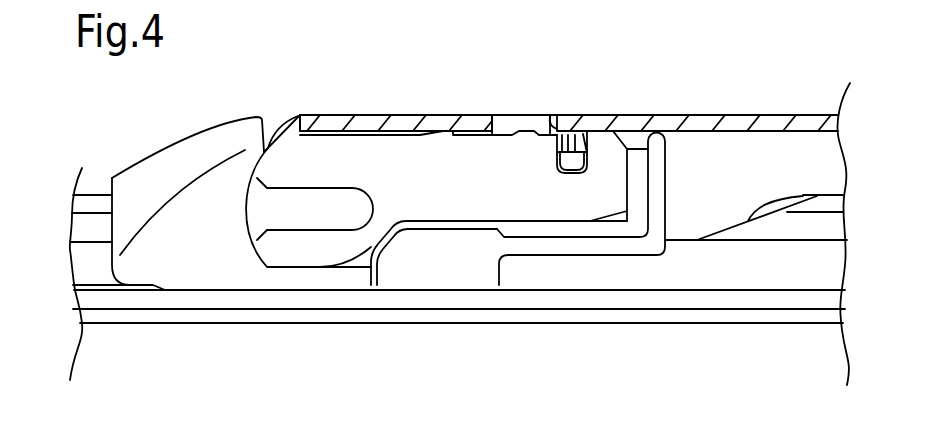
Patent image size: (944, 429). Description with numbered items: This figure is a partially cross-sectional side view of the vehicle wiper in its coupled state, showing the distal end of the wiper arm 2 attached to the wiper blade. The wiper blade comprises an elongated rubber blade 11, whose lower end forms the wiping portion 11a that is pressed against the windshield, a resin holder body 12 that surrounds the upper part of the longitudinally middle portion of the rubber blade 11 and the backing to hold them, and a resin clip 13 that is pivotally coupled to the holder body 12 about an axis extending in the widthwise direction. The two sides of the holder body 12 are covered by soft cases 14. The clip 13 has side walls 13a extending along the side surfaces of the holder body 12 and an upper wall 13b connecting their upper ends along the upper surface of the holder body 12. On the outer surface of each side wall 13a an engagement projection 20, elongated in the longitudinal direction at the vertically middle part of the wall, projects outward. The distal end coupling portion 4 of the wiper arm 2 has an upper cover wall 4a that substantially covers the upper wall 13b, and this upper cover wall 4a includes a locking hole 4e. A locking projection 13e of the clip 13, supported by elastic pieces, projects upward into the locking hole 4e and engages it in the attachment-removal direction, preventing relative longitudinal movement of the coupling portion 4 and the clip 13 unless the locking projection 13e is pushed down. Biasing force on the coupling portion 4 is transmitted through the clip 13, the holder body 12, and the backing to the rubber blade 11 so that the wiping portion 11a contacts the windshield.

The wiper arm 2 is at (817, 113).
The distal end coupling portion 4 is at (369, 114).
The upper cover wall 4a is at (325, 114).
The locking hole 4e is at (545, 115).
The rubber blade 11 is at (178, 324).
The wiping portion 11a is at (244, 325).
The holder body 12 is at (179, 132).
The clip 13 is at (405, 143).
The side wall 13a is at (430, 214).
The upper wall 13b is at (449, 129).
The locking projection 13e is at (520, 116).
The soft case 14 is at (94, 193).
The engagement projection 20 is at (311, 195).